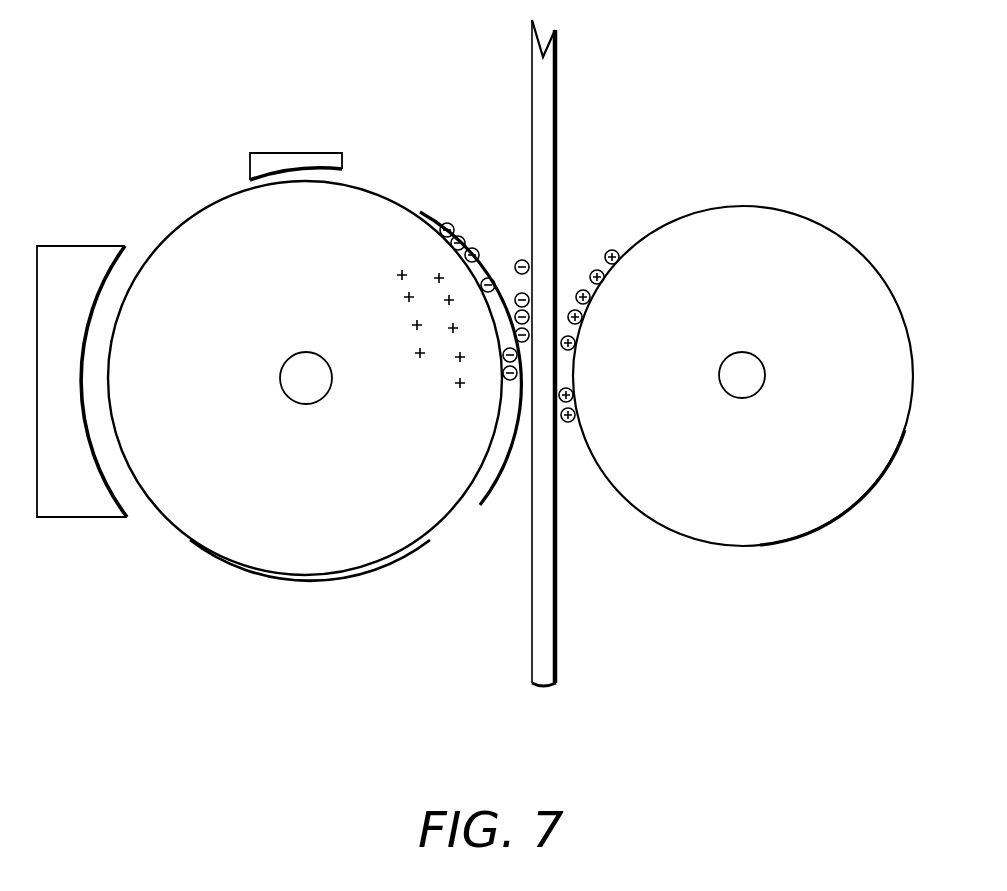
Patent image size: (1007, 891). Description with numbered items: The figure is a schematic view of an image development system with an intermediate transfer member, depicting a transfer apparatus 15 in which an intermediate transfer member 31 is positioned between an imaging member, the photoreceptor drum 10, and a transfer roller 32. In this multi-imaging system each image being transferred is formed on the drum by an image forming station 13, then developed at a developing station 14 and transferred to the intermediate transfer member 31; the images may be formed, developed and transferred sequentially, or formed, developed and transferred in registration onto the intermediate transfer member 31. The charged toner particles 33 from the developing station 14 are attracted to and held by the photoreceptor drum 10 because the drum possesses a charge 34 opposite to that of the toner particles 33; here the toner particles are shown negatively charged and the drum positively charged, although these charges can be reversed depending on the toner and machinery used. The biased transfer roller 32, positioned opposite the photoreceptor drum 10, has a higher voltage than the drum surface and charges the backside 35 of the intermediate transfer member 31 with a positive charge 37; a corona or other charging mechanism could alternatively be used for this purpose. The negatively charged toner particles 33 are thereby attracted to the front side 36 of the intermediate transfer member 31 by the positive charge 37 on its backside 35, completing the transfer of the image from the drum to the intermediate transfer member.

The photoreceptor drum 10 is at (282, 560).
The image forming station 13 is at (85, 263).
The developing station 14 is at (298, 158).
The transfer apparatus 15 is at (707, 99).
The intermediate transfer member 31 is at (543, 345).
The transfer roller 32 is at (693, 528).
The charged toner particles 33 is at (451, 226).
The charge 34 is at (402, 271).
The backside 35 is at (557, 57).
The front side 36 is at (532, 125).
The positive charge 37 is at (614, 248).